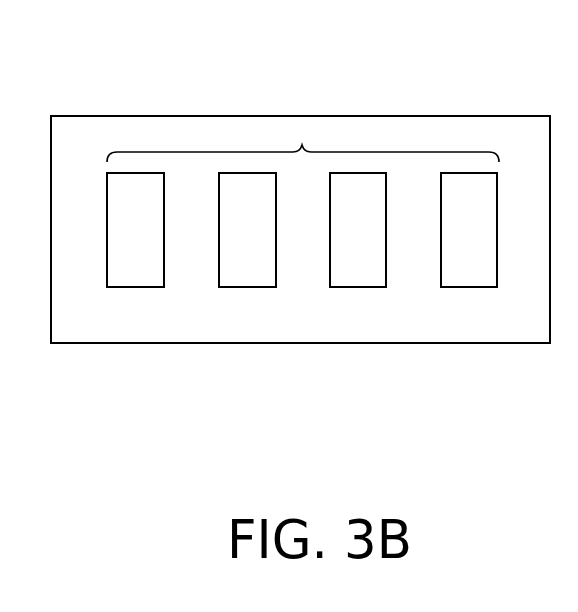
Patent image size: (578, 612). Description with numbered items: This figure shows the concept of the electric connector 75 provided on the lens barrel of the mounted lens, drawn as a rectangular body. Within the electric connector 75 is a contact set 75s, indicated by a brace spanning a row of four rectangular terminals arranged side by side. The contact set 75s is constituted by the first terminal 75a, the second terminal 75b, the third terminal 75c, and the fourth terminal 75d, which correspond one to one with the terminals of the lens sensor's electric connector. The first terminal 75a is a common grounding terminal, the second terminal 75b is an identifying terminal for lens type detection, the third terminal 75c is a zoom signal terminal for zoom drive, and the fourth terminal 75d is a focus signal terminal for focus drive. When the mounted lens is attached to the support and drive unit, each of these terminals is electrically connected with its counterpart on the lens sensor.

The electric connector 75 is at (433, 116).
The contact set 75s is at (302, 145).
The first terminal 75a is at (469, 287).
The second terminal 75b is at (360, 287).
The third terminal 75c is at (248, 287).
The fourth terminal 75d is at (135, 287).